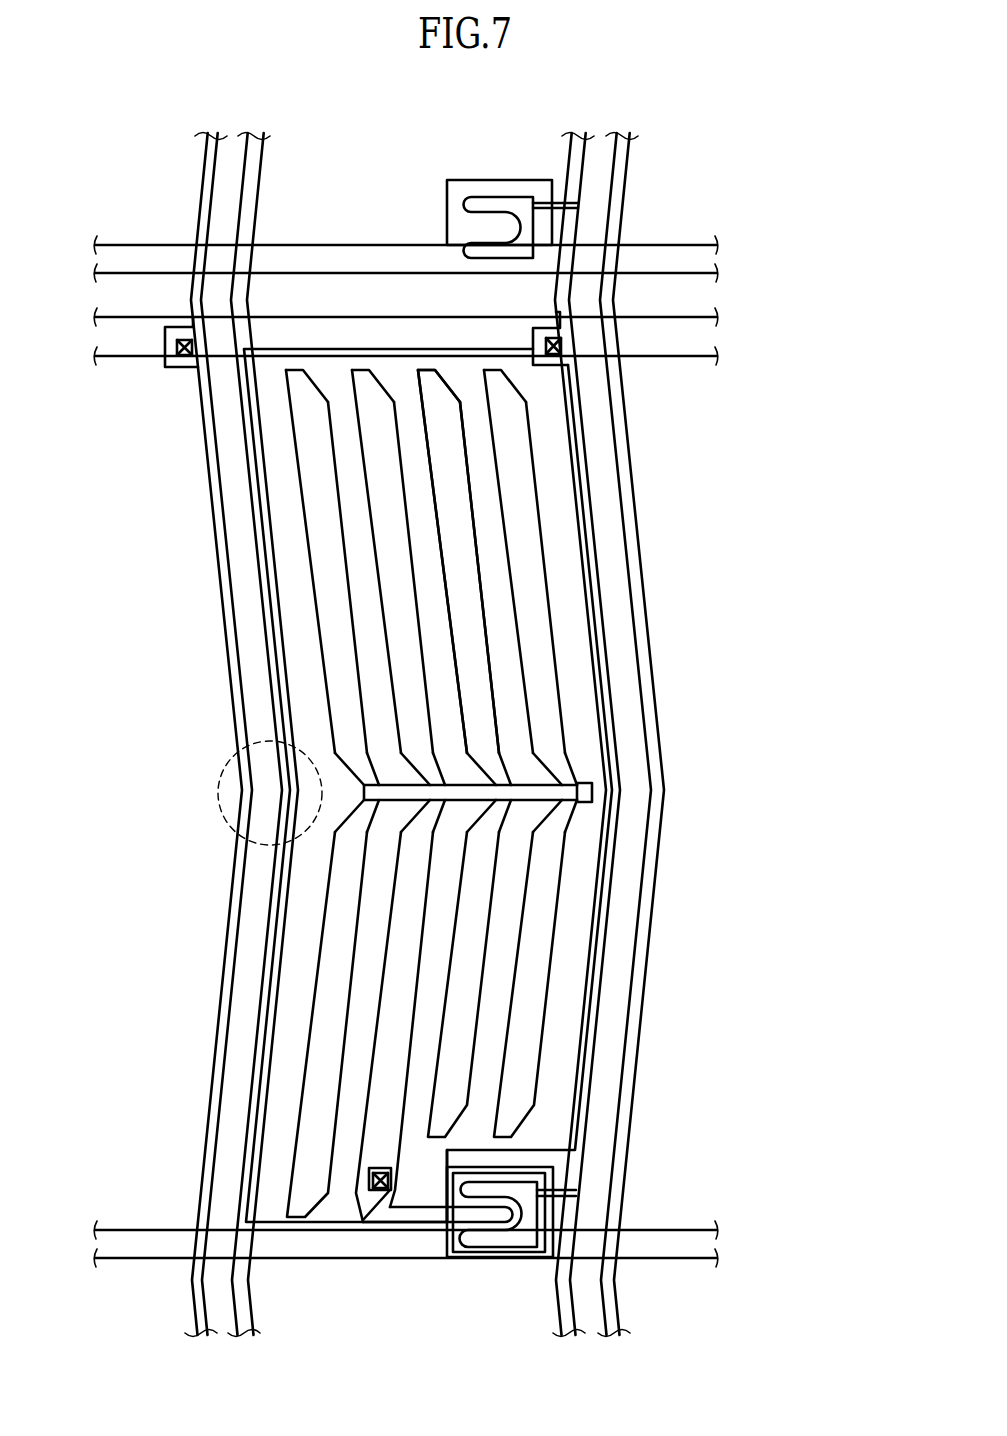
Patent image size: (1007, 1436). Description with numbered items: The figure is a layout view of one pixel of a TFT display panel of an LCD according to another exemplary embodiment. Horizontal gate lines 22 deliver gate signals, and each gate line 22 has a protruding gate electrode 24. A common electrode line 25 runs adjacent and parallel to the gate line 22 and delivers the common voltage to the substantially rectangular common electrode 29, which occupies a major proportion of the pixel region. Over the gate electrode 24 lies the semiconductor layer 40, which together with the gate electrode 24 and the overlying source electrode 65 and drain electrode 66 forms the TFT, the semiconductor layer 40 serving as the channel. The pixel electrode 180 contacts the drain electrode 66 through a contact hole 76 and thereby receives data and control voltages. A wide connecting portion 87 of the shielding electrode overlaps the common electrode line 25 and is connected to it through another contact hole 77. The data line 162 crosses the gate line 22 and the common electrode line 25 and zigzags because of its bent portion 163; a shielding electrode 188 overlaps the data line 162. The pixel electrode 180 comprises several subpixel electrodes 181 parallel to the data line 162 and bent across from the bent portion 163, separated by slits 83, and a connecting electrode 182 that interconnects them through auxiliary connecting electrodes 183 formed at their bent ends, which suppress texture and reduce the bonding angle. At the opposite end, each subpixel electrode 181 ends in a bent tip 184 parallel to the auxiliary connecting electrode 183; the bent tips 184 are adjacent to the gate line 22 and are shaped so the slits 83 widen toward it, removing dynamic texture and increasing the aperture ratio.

The gate line 22 is at (705, 1258).
The gate electrode 24 is at (556, 1210).
The common electrode line 25 is at (700, 333).
The common electrode 29 is at (321, 349).
The semiconductor layer 40 is at (441, 1244).
The source electrode 65 is at (507, 1246).
The drain electrode 66 is at (481, 1214).
The contact hole 76 is at (350, 1197).
The contact hole 77 is at (563, 345).
The slit 83 is at (432, 572).
The connecting portion 87 is at (548, 330).
The data line 162 is at (257, 710).
The bent portion 163 is at (218, 790).
The pixel electrode 180 is at (459, 796).
The subpixel electrode 181 is at (545, 685).
The connecting electrode 182 is at (497, 760).
The auxiliary connecting electrode 183 is at (563, 767).
The bent tip 184 is at (297, 387).
The shielding electrode 188 is at (230, 637).